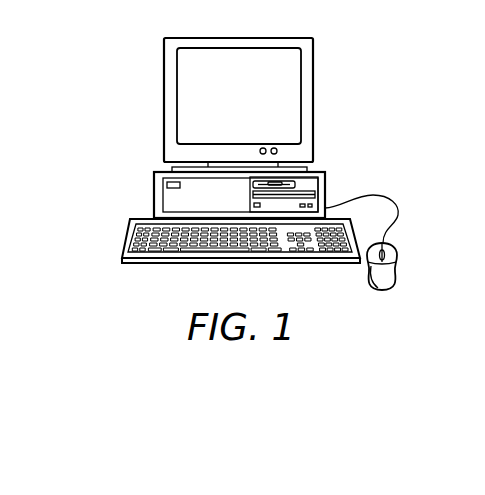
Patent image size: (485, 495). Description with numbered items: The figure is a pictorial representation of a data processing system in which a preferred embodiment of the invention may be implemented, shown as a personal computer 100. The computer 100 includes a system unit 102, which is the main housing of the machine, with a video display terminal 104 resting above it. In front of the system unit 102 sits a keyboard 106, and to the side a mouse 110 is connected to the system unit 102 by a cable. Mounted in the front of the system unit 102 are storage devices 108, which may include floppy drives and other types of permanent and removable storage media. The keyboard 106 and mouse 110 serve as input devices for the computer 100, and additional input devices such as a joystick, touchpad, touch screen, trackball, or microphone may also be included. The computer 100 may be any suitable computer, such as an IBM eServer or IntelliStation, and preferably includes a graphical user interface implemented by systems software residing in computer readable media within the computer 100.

The computer 100 is at (100, 88).
The system unit 102 is at (154, 193).
The video display terminal 104 is at (313, 98).
The keyboard 106 is at (150, 262).
The storage devices 108 is at (327, 187).
The mouse 110 is at (382, 290).